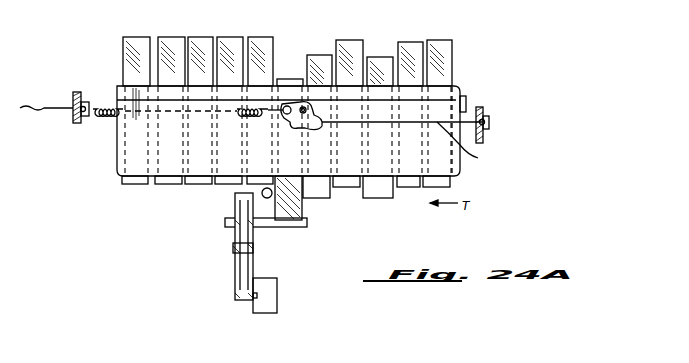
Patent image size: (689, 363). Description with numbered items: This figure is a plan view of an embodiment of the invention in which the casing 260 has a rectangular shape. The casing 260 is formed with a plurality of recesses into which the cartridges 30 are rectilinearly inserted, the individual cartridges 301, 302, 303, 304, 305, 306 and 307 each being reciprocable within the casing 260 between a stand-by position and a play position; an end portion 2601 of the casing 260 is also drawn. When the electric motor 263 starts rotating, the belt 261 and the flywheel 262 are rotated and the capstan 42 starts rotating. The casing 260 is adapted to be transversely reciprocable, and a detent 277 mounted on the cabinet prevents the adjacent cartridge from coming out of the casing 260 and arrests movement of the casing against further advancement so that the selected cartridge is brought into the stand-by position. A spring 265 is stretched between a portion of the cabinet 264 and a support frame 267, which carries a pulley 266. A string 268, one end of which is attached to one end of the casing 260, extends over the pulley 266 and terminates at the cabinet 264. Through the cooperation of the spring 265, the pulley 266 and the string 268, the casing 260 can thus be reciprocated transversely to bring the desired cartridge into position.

The cartridge 30 is at (291, 47).
The block 301 is at (442, 39).
The block 302 is at (410, 41).
The block 303 is at (375, 56).
The block 304 is at (348, 39).
The block 305 is at (315, 54).
The block 306 is at (288, 78).
The block 307 is at (255, 36).
The casing 260 is at (453, 86).
The tab 2601 is at (467, 96).
The cabinet 264 is at (72, 112).
The spring 265 is at (104, 114).
The pulley 266 is at (302, 104).
The support frame 267 is at (292, 132).
The string 268 is at (469, 149).
The detent 277 is at (261, 193).
The flywheel 262 is at (234, 247).
The belt 261 is at (250, 263).
The electric motor 263 is at (278, 294).
The capstan 42 is at (304, 227).